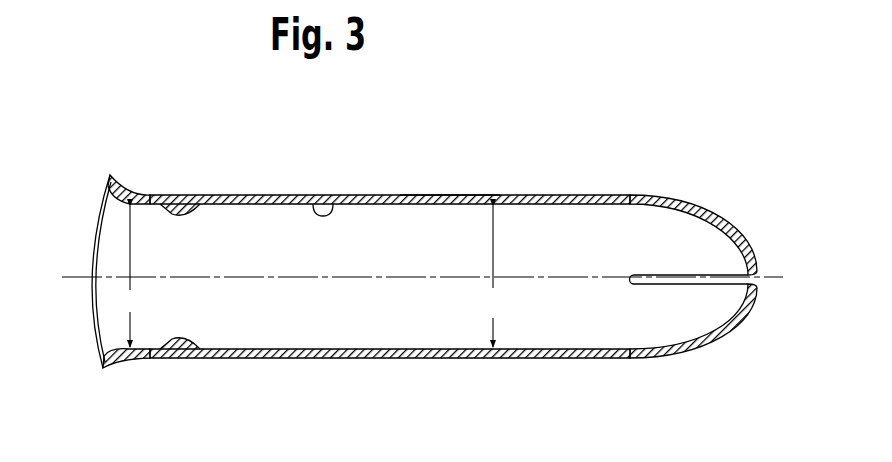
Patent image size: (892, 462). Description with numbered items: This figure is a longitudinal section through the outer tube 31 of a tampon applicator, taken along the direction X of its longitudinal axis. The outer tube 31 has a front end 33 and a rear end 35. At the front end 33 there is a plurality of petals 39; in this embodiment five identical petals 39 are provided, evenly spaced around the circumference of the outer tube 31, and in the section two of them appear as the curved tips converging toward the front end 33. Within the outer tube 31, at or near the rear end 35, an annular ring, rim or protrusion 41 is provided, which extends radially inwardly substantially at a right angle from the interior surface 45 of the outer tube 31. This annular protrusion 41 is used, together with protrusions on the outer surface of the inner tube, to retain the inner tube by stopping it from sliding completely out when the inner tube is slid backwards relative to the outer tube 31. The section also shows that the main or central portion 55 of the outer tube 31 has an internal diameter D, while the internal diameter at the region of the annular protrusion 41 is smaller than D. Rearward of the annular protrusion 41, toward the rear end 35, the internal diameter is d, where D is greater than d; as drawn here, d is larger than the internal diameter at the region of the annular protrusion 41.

The outer tube 31 is at (530, 362).
The front end 33 is at (758, 258).
The rear end 35 is at (95, 322).
The petals 39 is at (710, 243).
The annular protrusion 41 is at (203, 200).
The interior surface 45 is at (333, 196).
The central portion 55 is at (450, 195).
The longitudinal axis direction X is at (352, 279).
The internal diameter of central portion D is at (493, 276).
The internal diameter rearward of annular protrusion d is at (130, 276).